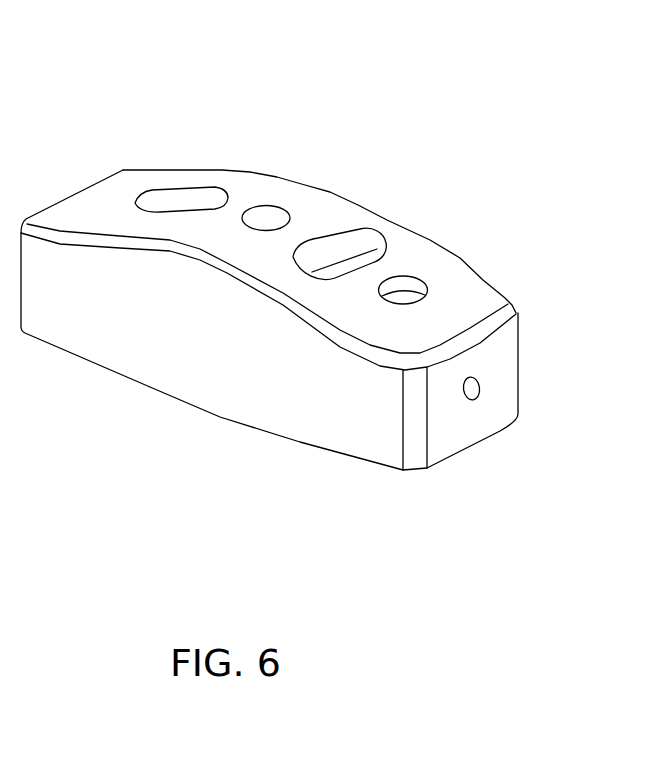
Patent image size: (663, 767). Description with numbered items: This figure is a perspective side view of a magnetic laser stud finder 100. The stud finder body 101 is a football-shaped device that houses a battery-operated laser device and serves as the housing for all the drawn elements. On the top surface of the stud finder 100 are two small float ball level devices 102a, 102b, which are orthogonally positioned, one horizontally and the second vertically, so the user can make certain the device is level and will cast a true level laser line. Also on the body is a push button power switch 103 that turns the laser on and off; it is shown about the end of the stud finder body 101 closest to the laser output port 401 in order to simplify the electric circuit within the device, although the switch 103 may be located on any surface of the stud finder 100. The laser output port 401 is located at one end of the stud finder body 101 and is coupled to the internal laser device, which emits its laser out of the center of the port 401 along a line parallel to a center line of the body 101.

The magnetic laser stud finder 100 is at (347, 61).
The stud finder body 101 is at (135, 170).
The float ball level device 102a is at (365, 236).
The float ball level device 102b is at (218, 192).
The push button power switch 103 is at (413, 279).
The laser output port 401 is at (477, 397).